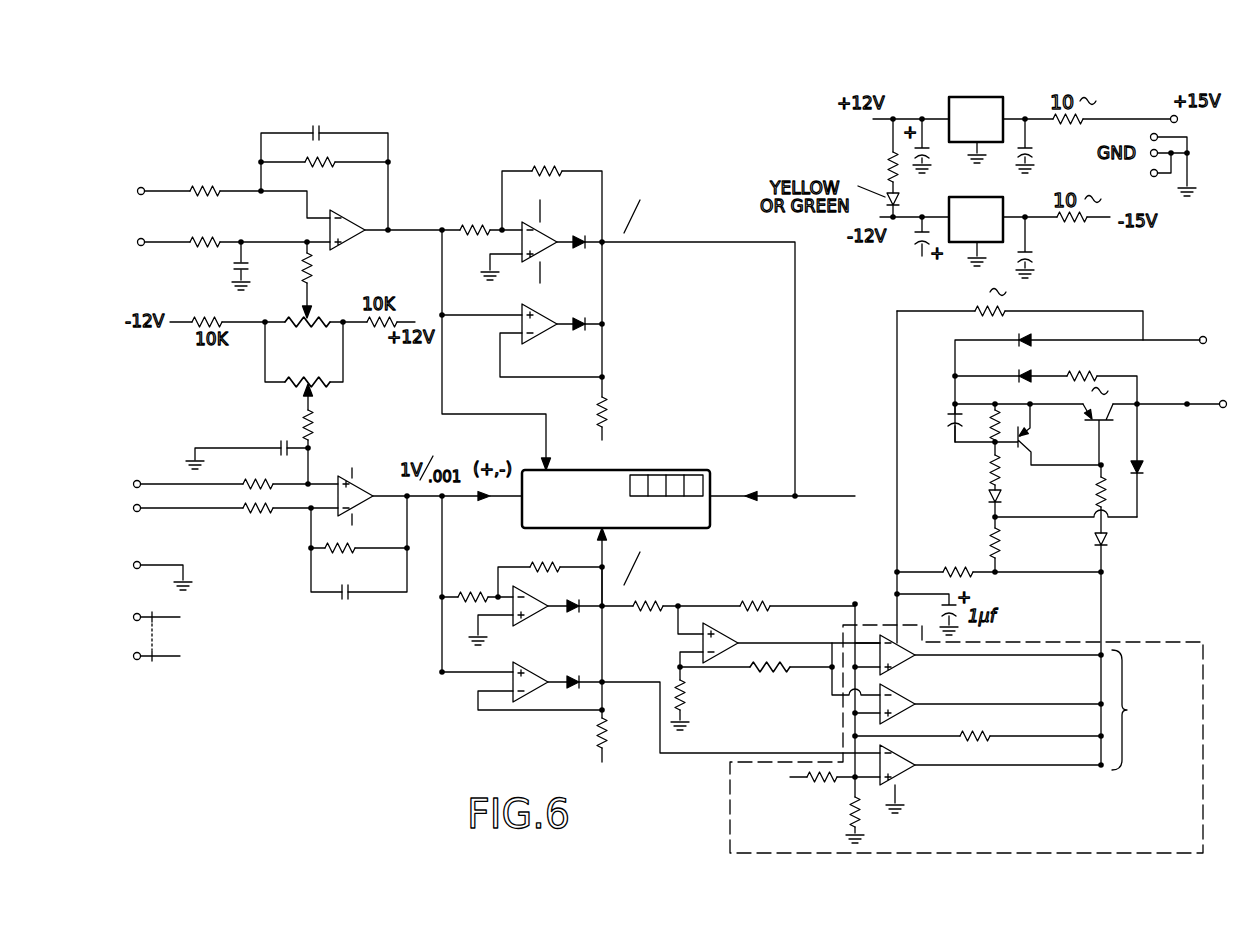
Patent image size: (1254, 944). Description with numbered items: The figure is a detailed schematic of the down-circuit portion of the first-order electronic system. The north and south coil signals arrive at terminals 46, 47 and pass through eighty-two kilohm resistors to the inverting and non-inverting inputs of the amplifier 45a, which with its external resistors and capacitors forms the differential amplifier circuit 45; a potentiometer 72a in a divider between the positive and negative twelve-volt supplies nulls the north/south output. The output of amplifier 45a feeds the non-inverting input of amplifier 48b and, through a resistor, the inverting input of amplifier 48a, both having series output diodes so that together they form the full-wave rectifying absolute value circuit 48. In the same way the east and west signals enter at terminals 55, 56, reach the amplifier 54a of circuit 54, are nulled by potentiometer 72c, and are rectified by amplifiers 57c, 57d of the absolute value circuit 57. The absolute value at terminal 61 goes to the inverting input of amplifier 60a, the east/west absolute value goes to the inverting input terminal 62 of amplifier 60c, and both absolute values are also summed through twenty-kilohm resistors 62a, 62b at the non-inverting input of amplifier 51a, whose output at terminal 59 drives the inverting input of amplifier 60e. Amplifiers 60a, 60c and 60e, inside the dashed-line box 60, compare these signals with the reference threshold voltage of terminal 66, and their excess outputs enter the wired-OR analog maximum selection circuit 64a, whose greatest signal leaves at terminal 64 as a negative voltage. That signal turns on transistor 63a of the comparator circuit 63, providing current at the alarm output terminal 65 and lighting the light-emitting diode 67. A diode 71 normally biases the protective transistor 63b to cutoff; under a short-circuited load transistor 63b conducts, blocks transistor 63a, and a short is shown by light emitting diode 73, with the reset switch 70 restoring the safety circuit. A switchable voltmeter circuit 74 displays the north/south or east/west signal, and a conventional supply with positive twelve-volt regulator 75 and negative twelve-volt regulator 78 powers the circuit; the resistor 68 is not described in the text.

The differential amplifier circuit 45 is at (352, 197).
The amplifier 45a is at (364, 243).
The terminal 46 is at (142, 186).
The terminal 47 is at (142, 248).
The absolute value circuit 48 is at (622, 298).
The amplifier 48a is at (548, 240).
The amplifier 48b is at (540, 338).
The amplifier 51a is at (717, 633).
The amplifier 54 is at (266, 546).
The amplifier 54a is at (338, 478).
The terminal 55 is at (139, 480).
The terminal 56 is at (140, 512).
The absolute value circuit 57 is at (574, 630).
The amplifier 57c is at (527, 617).
The amplifier 57d is at (538, 666).
The terminal 59 is at (832, 693).
The dashed-line box 60 is at (986, 723).
The amplifier 60a is at (912, 657).
The amplifier 60c is at (912, 764).
The amplifier 60e is at (912, 698).
The terminal 61 is at (867, 635).
The inverting input terminal 62 is at (741, 671).
The resistor 62a is at (758, 604).
The resistor 62b is at (673, 610).
The comparator circuit 63 is at (1075, 432).
The transistor 63a is at (1113, 422).
The protective transistor 63b is at (1018, 458).
The terminal 64 is at (1103, 612).
The analog selection circuit 64a is at (1135, 710).
The alarm output terminal 65 is at (1221, 398).
The terminal 66 is at (858, 789).
The light-emitting diode 67 is at (1110, 532).
The resistor 68 is at (973, 575).
The reset switch 70 is at (1097, 328).
The diode 71 is at (1143, 478).
The potentiometer 72a is at (304, 308).
The potentiometer 72c is at (303, 390).
The light emitting diode 73 is at (990, 504).
The circuit 74 is at (656, 470).
The positive 12-volt regulator 75 is at (962, 146).
The negative 12-volt regulator 78 is at (1001, 198).